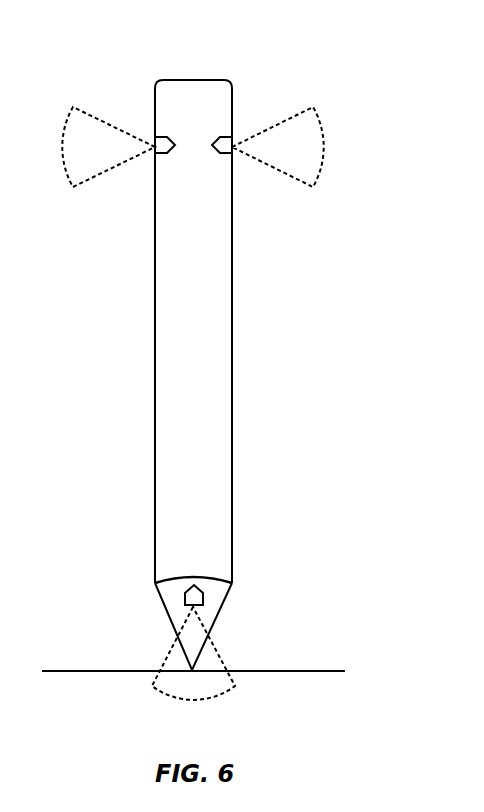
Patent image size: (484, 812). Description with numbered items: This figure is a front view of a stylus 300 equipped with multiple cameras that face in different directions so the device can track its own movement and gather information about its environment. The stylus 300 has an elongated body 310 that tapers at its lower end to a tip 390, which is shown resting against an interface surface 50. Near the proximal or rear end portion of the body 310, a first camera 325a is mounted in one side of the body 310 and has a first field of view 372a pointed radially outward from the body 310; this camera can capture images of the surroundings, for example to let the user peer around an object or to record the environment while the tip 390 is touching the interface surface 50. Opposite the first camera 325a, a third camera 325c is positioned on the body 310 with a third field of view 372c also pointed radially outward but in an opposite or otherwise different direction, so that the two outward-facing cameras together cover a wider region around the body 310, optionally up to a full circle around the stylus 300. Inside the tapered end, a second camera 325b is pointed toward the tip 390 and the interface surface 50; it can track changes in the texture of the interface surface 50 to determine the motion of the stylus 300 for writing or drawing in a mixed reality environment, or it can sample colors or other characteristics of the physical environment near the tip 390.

The stylus 300 is at (250, 358).
The body 310 is at (155, 342).
The first camera 325a is at (170, 155).
The second camera 325b is at (195, 585).
The third camera 325c is at (209, 137).
The first field of view 372a is at (73, 107).
The third field of view 372c is at (313, 107).
The tip 390 is at (185, 668).
The interface surface 50 is at (80, 671).